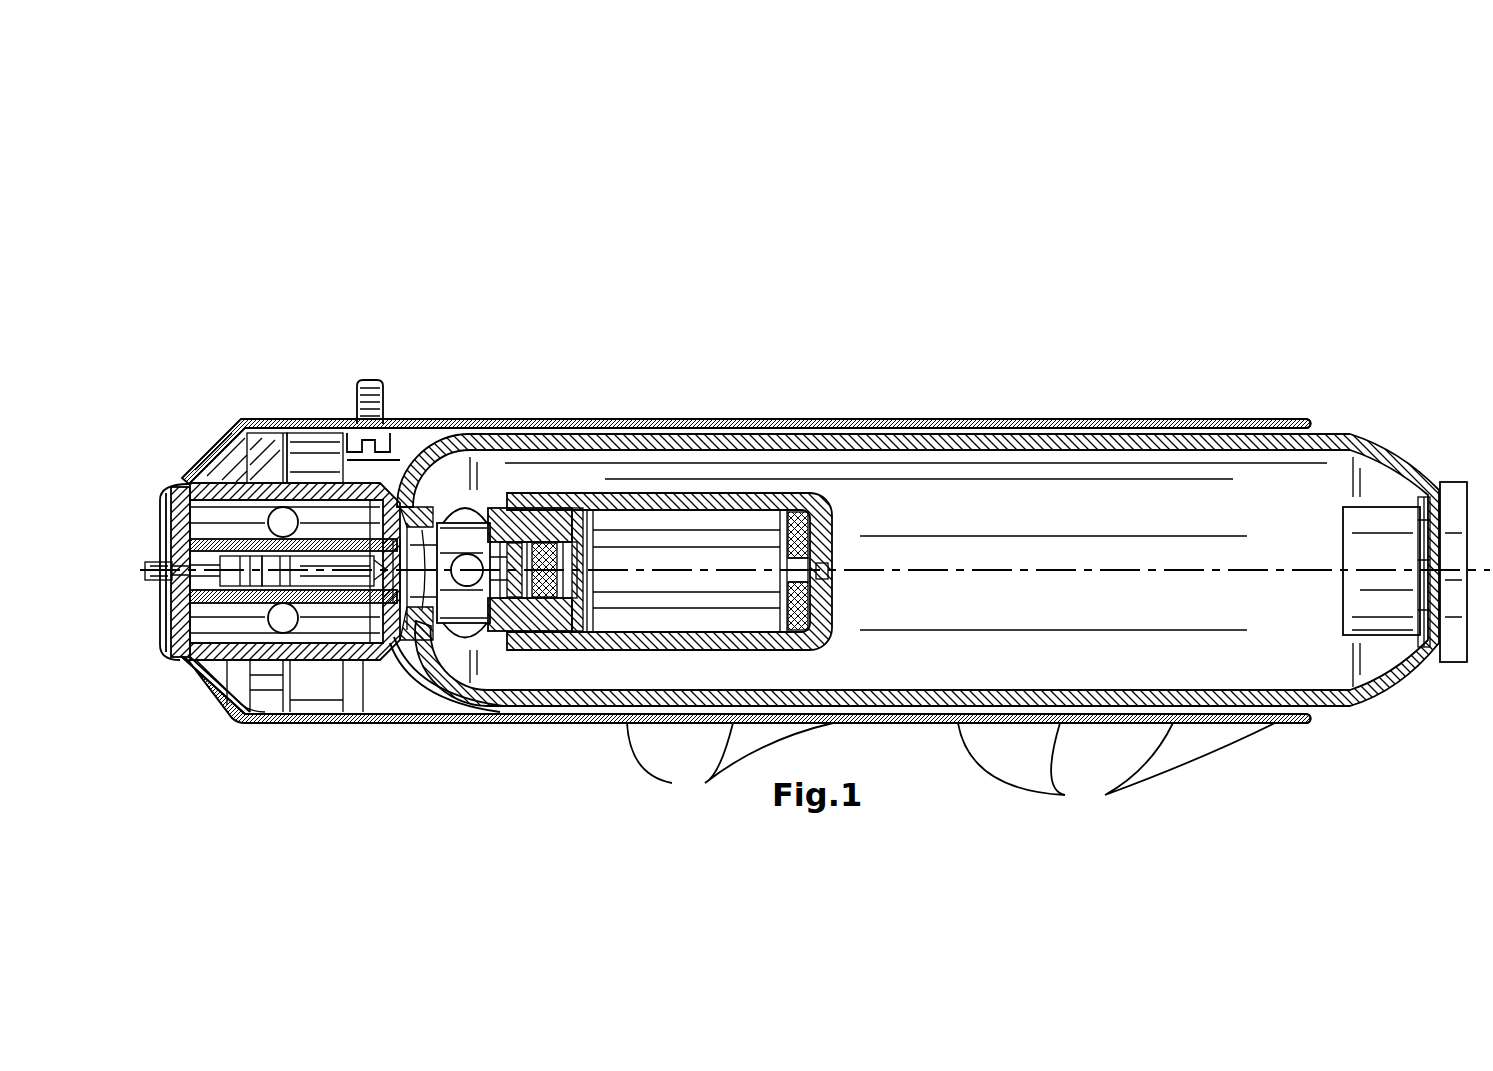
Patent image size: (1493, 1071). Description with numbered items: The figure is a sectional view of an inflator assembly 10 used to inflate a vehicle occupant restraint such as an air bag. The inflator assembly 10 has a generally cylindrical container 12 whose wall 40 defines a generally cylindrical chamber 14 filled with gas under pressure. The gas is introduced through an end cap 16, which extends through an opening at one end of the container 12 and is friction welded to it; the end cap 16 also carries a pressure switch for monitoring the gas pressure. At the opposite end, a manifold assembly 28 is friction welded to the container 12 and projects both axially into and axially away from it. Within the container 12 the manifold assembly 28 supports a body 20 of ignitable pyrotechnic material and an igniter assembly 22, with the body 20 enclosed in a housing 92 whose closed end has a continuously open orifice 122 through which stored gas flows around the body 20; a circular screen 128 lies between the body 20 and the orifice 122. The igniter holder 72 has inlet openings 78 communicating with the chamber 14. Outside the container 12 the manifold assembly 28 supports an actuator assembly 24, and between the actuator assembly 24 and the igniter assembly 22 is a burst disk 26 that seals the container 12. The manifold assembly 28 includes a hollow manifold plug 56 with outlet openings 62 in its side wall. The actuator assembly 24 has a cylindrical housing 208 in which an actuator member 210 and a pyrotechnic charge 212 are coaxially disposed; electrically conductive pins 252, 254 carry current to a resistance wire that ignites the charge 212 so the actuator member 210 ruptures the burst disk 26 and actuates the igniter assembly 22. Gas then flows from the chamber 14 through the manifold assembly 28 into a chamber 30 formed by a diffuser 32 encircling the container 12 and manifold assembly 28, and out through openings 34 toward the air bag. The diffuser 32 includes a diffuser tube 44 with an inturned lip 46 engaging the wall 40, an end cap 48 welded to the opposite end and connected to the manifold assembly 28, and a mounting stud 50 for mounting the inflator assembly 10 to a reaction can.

The inflator assembly 10 is at (1145, 265).
The container 12 is at (960, 432).
The chamber 14 is at (1190, 497).
The end cap 16 is at (1458, 497).
The body of ignitable pyrotechnic material 20 is at (680, 540).
The igniter assembly 22 is at (545, 535).
The actuator assembly 24 is at (226, 523).
The burst disk 26 is at (455, 523).
The manifold assembly 28 is at (362, 668).
The chamber 30 is at (398, 693).
The diffuser 32 is at (573, 731).
The openings 34 is at (951, 768).
The wall 40 is at (1098, 448).
The diffuser tube 44 is at (840, 419).
The lip 46 is at (1310, 430).
The end cap 48 is at (205, 683).
The mounting stud 50 is at (373, 398).
The manifold plug 56 is at (232, 702).
The outlet openings 62 is at (272, 496).
The igniter holder 72 is at (528, 622).
The inlet openings 78 is at (488, 495).
The housing 92 is at (724, 500).
The orifice 122 is at (832, 578).
The screen 128 is at (835, 525).
The housing 208 is at (327, 539).
The actuator member 210 is at (325, 583).
The pyrotechnic charge 212 is at (252, 583).
The pin 252 is at (160, 562).
The pin 254 is at (163, 578).